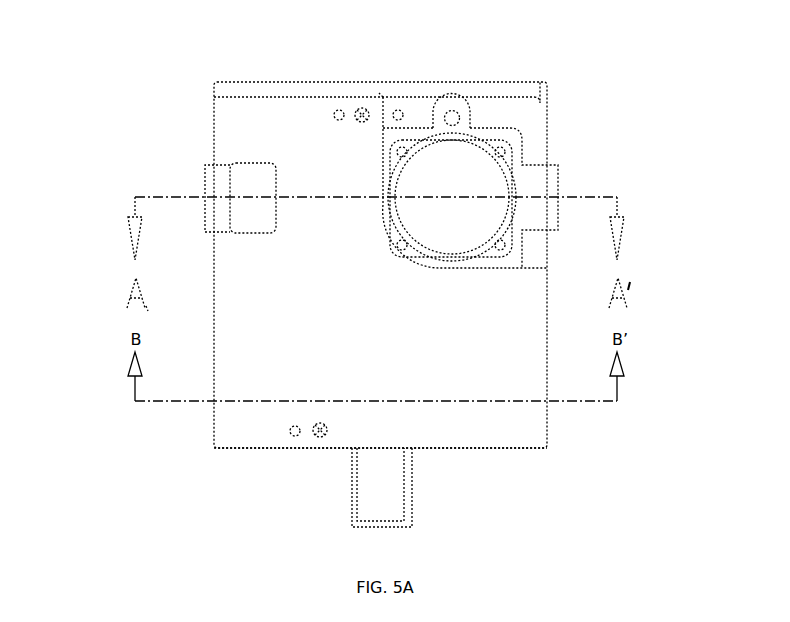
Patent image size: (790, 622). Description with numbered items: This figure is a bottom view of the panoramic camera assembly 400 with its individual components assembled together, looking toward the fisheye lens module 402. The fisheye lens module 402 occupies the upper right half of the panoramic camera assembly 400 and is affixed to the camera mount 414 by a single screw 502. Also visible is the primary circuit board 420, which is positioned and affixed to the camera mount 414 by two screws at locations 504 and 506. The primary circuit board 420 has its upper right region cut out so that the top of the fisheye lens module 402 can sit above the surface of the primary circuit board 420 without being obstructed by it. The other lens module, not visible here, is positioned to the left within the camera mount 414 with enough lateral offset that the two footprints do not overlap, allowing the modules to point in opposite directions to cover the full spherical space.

The panoramic camera assembly 400 is at (403, 25).
The fisheye lens module 402 is at (452, 178).
The camera mount 414 is at (228, 88).
The primary circuit board 420 is at (280, 415).
The screw 502 is at (458, 113).
The screw location 504 is at (359, 108).
The screw location 506 is at (318, 436).